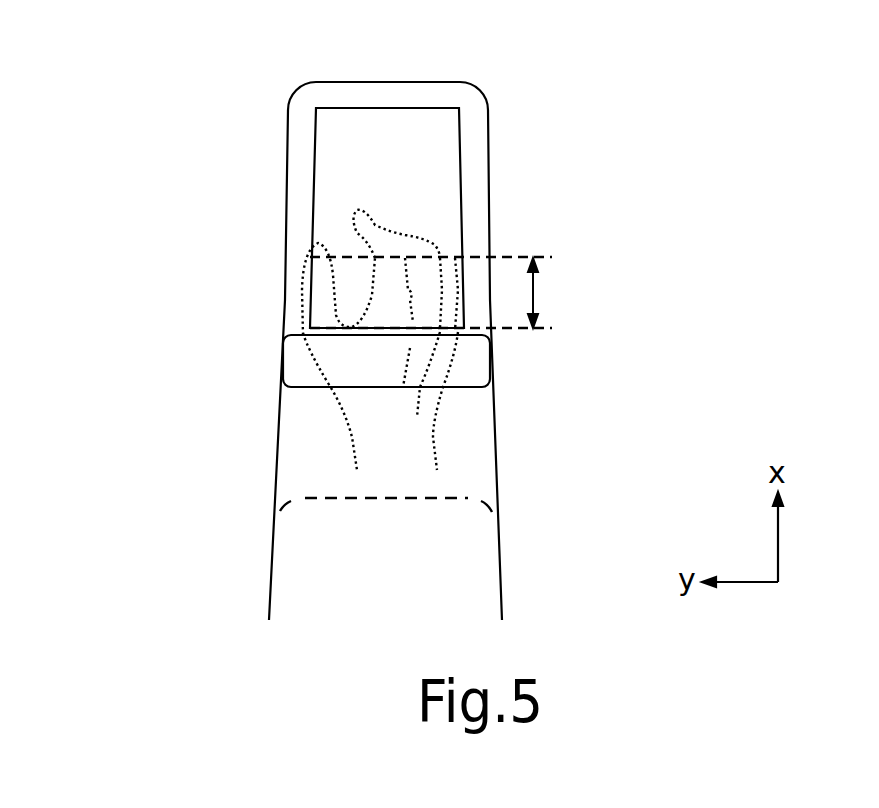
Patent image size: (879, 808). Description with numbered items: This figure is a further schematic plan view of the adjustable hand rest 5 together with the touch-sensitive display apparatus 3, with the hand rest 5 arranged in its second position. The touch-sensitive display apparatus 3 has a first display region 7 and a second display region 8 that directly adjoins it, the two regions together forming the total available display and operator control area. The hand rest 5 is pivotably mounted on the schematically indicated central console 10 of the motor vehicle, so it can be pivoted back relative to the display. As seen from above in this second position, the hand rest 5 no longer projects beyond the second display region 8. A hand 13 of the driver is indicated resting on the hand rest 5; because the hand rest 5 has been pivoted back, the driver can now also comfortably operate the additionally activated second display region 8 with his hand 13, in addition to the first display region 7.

The touch-sensitive display apparatus 3 is at (228, 180).
The first display region 7 is at (338, 122).
The second display region 8 is at (352, 293).
The adjustable hand rest 5 is at (285, 361).
The hand 13 is at (437, 352).
The central console 10 is at (216, 576).